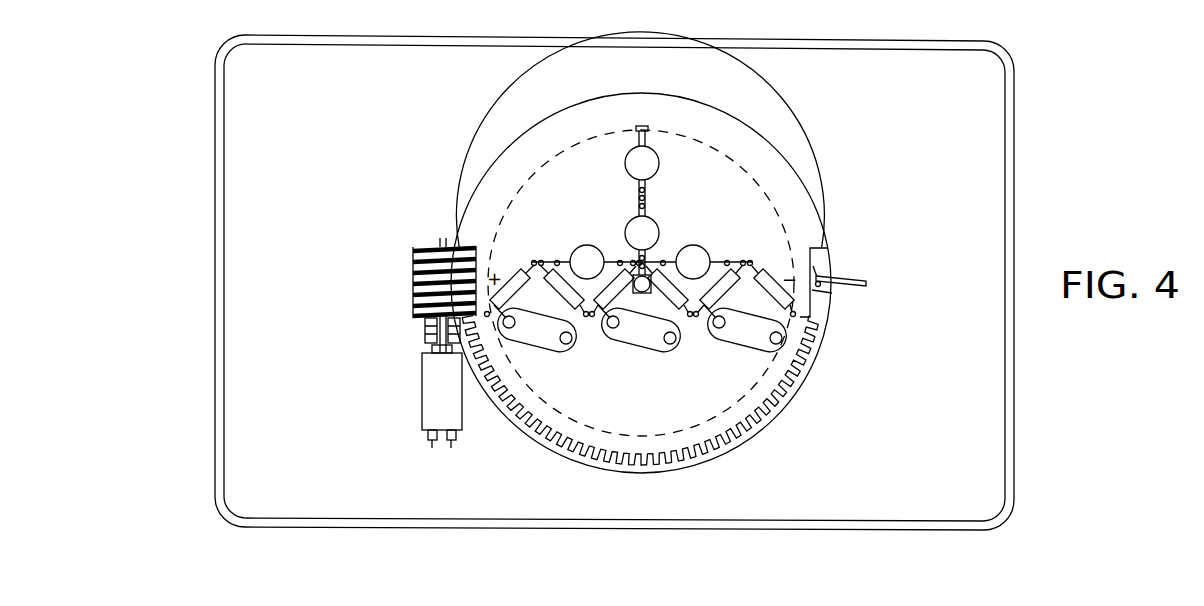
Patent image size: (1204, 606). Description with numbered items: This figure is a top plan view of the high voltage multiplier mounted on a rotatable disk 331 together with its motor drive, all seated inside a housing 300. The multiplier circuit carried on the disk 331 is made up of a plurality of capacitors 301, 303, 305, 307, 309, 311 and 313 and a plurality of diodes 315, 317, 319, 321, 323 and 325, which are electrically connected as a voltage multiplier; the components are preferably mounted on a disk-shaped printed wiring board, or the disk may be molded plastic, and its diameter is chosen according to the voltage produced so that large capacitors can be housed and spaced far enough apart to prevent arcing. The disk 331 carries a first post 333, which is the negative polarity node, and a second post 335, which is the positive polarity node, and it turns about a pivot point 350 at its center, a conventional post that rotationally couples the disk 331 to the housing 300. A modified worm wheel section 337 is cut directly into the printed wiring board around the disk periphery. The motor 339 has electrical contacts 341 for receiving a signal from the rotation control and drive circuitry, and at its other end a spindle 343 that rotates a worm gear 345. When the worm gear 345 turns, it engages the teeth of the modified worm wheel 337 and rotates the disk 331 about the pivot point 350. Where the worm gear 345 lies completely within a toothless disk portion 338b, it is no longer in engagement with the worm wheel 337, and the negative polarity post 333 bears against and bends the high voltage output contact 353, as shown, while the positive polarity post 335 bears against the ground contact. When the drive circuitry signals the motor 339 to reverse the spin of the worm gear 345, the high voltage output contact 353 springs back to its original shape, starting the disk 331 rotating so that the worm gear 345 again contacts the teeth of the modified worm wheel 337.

The housing 300 is at (995, 85).
The capacitor 301 is at (649, 152).
The capacitor 303 is at (650, 225).
The capacitor 305 is at (583, 245).
The capacitor 307 is at (707, 247).
The capacitor 309 is at (539, 336).
The capacitor 311 is at (638, 338).
The capacitor 313 is at (737, 338).
The diode 315 is at (510, 283).
The diode 317 is at (562, 297).
The diode 319 is at (590, 323).
The diode 321 is at (690, 323).
The diode 323 is at (712, 298).
The diode 325 is at (820, 315).
The disk 331 is at (808, 186).
The first post 333 is at (832, 293).
The second post 335 is at (390, 354).
The modified worm wheel section 337 is at (795, 398).
The disk portion 338b is at (822, 262).
The motor 339 is at (449, 466).
The electrical contacts 341 is at (440, 447).
The spindle 343 is at (407, 295).
The worm gear 345 is at (416, 280).
The pivot point 350 is at (652, 272).
The high voltage output contact 353 is at (864, 281).